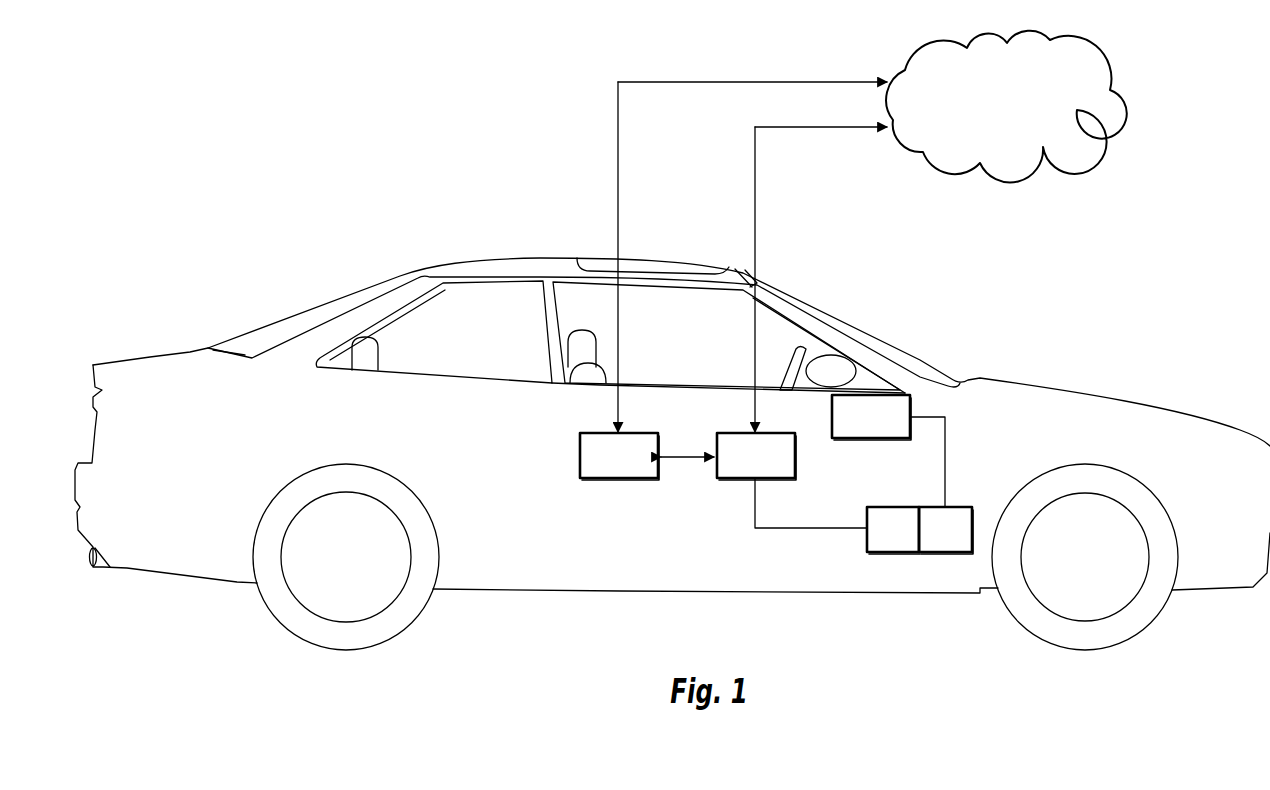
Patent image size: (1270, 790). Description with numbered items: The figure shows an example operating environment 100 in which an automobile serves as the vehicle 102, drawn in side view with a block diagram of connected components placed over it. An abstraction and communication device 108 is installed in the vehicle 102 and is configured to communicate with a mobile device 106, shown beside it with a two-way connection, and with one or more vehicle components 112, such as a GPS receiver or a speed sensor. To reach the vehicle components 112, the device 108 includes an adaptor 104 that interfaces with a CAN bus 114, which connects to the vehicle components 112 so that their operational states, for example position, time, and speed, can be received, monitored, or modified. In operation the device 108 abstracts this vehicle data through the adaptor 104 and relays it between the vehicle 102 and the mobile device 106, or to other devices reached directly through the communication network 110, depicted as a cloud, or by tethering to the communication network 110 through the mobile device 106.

The operating environment 100 is at (672, 340).
The vehicle 102 is at (672, 433).
The adaptor 104 is at (893, 530).
The mobile device 106 is at (733, 281).
The abstraction and communication device 108 is at (774, 327).
The communication network 110 is at (1006, 107).
The vehicle components 112 is at (888, 451).
The CAN bus 114 is at (946, 530).